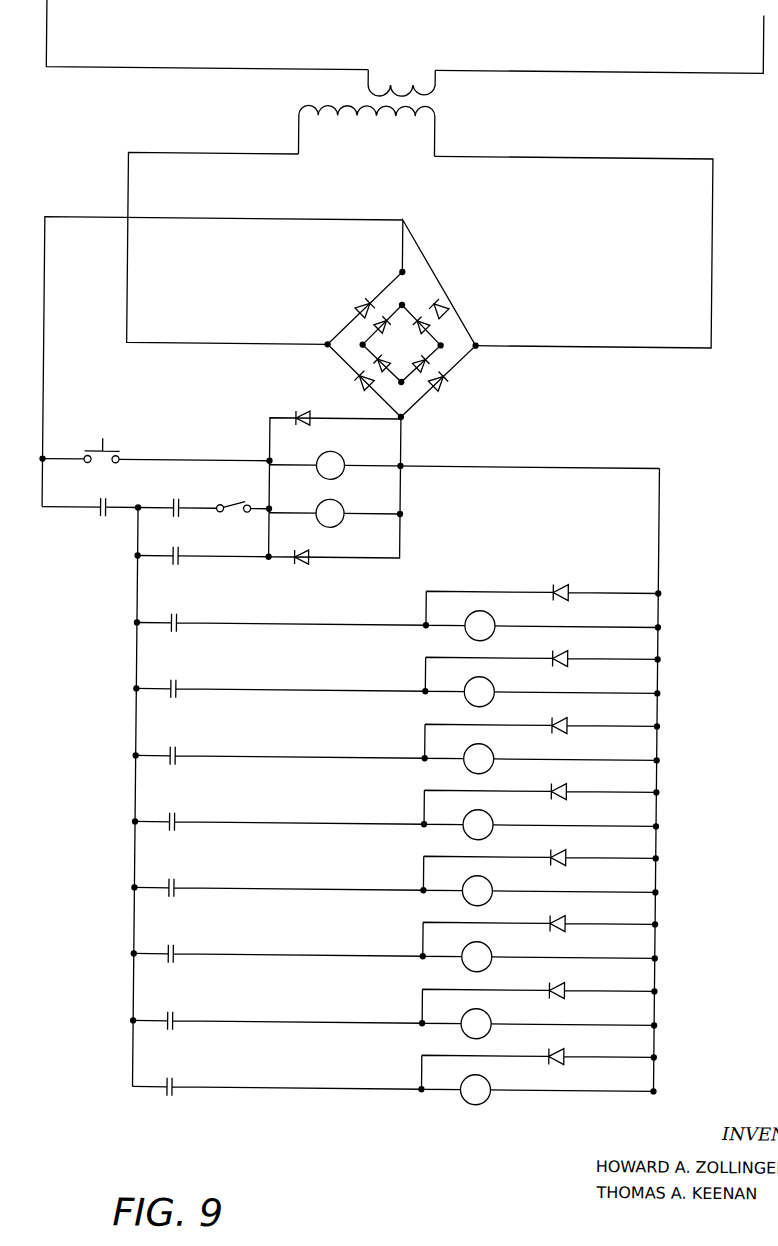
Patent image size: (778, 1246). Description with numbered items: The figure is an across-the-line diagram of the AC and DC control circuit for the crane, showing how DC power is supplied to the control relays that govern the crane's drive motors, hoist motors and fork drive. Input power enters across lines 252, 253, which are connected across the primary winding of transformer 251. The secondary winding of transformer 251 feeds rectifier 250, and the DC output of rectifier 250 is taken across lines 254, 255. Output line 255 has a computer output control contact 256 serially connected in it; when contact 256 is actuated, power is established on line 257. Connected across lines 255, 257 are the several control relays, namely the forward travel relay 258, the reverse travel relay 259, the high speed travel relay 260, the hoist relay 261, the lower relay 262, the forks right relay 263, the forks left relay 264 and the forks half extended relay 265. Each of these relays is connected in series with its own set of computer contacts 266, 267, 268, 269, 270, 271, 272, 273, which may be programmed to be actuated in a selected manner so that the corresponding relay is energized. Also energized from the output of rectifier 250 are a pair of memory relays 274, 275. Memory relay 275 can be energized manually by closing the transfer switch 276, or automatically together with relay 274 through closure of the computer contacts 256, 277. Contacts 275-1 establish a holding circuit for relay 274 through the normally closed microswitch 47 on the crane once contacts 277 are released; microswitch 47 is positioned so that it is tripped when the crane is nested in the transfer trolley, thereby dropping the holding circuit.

The input power line 252 is at (41, 33).
The input power line 253 is at (757, 40).
The transformer 251 is at (461, 109).
The rectifier 250 is at (456, 322).
The output line 255 is at (41, 408).
The transfer switch 276 is at (118, 449).
The microswitch 47 is at (228, 507).
The contacts 275-1 is at (198, 482).
The computer output control contact 256 is at (97, 517).
The line 257 is at (137, 590).
The computer contacts 277 is at (182, 562).
The memory relay 275 is at (343, 471).
The memory relay 274 is at (343, 517).
The output line 254 is at (659, 535).
The forward travel relay 258 is at (468, 636).
The reverse travel relay 259 is at (468, 702).
The high speed travel relay 260 is at (468, 769).
The hoist relay 261 is at (468, 835).
The lower relay 262 is at (468, 901).
The forks right relay 263 is at (468, 967).
The forks left relay 264 is at (468, 1034).
The forks half extended relay 265 is at (468, 1100).
The computer contacts 266 is at (180, 633).
The computer contacts 267 is at (168, 700).
The computer contacts 268 is at (168, 767).
The computer contacts 269 is at (168, 833).
The computer contacts 270 is at (168, 899).
The computer contacts 271 is at (168, 965).
The computer contacts 272 is at (168, 1032).
The computer contacts 273 is at (168, 1098).